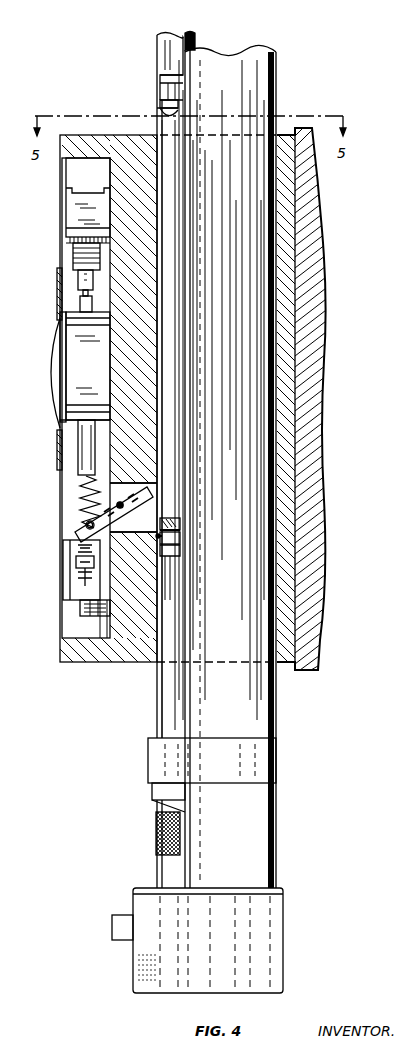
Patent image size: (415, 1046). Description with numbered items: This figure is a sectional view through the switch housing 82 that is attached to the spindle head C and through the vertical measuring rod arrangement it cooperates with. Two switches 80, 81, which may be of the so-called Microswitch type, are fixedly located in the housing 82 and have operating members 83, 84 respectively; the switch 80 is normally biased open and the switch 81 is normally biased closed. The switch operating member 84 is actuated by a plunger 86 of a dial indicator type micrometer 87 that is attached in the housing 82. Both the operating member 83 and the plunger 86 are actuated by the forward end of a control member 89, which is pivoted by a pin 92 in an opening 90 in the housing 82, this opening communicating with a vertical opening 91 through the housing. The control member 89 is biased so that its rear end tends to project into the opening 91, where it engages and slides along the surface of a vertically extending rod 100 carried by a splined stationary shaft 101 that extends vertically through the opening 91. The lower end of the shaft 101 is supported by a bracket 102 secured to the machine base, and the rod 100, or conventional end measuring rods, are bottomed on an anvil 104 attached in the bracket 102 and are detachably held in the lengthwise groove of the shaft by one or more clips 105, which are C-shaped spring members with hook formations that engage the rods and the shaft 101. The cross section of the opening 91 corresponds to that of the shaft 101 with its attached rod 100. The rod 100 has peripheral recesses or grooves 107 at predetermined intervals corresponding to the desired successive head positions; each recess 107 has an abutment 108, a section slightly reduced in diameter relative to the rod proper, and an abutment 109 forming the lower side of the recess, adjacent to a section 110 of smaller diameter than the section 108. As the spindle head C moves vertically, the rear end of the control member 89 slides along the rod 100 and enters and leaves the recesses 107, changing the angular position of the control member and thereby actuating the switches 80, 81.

The switch 80 is at (68, 560).
The switch 81 is at (75, 219).
The housing 82 is at (62, 656).
The switch operating member 83 is at (78, 531).
The switch operating member 84 is at (80, 280).
The plunger 86 is at (80, 490).
The dial indicator type micrometer 87 is at (75, 347).
The control member 89 is at (86, 526).
The opening 90 is at (140, 512).
The vertical opening 91 is at (160, 424).
The pin 92 is at (122, 494).
The rod 100 is at (158, 685).
The splined stationary shaft 101 is at (262, 722).
The bracket 102 is at (150, 913).
The anvil 104 is at (157, 838).
The clip 105 is at (150, 760).
The recess 107 is at (158, 104).
The abutment 108 is at (158, 538).
The abutment 109 is at (165, 116).
The section 110 is at (158, 95).
The spindle head C is at (332, 230).